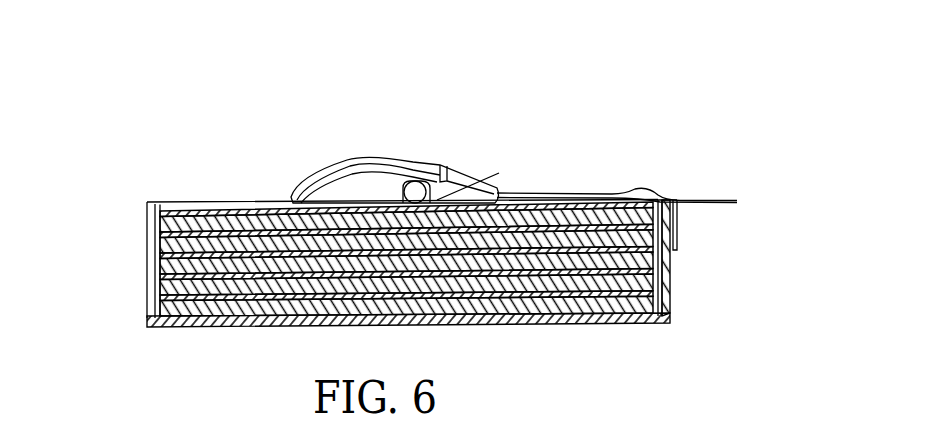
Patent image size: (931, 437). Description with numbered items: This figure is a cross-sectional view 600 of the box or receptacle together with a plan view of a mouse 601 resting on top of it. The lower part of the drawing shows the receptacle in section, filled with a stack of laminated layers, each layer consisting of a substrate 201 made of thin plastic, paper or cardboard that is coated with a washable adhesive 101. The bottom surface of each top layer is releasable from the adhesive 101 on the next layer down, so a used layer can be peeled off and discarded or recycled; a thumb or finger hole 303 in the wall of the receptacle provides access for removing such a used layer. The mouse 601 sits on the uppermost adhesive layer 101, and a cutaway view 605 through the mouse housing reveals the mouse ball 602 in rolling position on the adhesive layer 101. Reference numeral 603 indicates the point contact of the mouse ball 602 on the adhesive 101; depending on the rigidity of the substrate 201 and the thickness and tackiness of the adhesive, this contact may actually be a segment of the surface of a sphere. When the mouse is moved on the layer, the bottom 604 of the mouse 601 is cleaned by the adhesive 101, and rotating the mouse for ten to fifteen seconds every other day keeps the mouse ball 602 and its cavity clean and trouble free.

The washable adhesive 101 is at (210, 212).
The substrate 201 is at (160, 218).
The thumb or finger hole 303 is at (152, 237).
The cross-sectional view 600 is at (597, 158).
The mouse 601 is at (397, 203).
The mouse ball 602 is at (416, 190).
The point contact 603 is at (478, 199).
The bottom of the mouse 604 is at (328, 203).
The cutaway view 605 is at (382, 198).